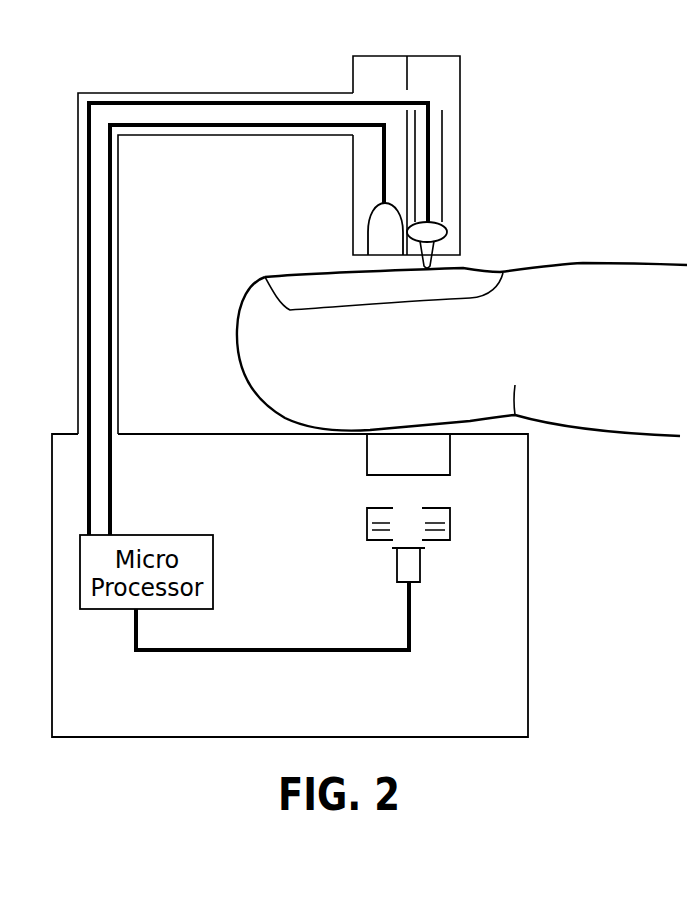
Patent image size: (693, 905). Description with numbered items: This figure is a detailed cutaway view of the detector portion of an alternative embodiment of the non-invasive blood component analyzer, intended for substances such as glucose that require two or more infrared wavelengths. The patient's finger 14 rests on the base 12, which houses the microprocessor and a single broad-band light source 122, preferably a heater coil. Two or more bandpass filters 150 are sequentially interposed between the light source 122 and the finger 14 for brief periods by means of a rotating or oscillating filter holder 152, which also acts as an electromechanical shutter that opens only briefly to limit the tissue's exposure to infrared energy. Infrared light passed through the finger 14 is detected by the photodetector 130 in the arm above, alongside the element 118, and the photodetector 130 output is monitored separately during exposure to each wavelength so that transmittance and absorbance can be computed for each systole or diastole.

The base 12 is at (508, 621).
The finger 14 is at (592, 275).
The light source fiber 118 is at (428, 157).
The photodetector 130 is at (380, 236).
The filter holder 152 is at (437, 453).
The bandpass filters 150 is at (367, 527).
The light source 122 is at (414, 567).